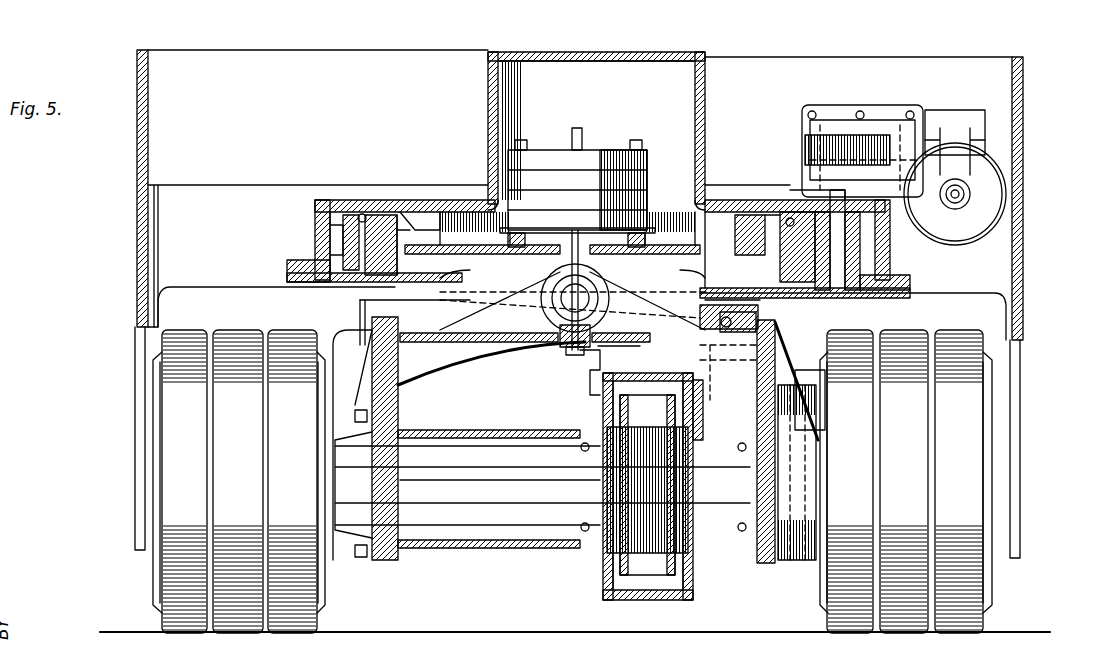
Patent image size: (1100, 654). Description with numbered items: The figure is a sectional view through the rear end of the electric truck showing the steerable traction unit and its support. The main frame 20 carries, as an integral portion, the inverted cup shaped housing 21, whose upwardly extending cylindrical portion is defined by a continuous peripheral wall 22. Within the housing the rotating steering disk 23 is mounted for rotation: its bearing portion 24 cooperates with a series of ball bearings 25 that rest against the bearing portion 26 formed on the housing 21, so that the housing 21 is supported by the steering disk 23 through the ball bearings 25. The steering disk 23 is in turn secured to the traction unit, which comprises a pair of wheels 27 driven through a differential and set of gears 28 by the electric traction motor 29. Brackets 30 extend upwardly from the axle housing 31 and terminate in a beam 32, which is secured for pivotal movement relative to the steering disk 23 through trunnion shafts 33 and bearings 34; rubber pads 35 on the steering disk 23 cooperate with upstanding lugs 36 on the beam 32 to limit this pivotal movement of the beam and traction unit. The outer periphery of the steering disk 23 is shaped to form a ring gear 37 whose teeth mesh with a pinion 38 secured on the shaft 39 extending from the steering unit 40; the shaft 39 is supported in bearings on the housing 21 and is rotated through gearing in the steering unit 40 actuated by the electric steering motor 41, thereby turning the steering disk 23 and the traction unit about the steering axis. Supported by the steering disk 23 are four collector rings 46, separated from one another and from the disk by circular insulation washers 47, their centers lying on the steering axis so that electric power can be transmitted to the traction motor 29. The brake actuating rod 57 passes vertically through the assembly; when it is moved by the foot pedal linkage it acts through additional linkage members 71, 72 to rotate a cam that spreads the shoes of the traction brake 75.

The main frame 20 is at (140, 152).
The inverted cup shaped housing 21 is at (336, 188).
The continuous peripheral wall 22 is at (706, 95).
The rotating steering disk 23 is at (820, 298).
The bearing portion 24 is at (364, 240).
The ball bearings 25 is at (360, 208).
The bearing portion 26 is at (392, 210).
The wheels 27 is at (170, 568).
The differential and set of gears 28 is at (710, 570).
The electric traction motor 29 is at (331, 323).
The brackets 30 is at (402, 386).
The axle housing 31 is at (355, 548).
The beam 32 is at (840, 332).
The trunnion shafts 33 is at (599, 298).
The bearings 34 is at (546, 285).
The rubber pads 35 is at (410, 300).
The upstanding lugs 36 is at (410, 306).
The ring gear 37 is at (342, 222).
The pinion 38 is at (862, 258).
The shaft 39 is at (862, 225).
The steering unit 40 is at (934, 95).
The electric steering motor 41 is at (1002, 212).
The collector rings 46 is at (649, 205).
The circular insulation washers 47 is at (611, 178).
The brake actuating rod 57 is at (586, 132).
The linkage member 71 is at (582, 366).
The linkage member 72 is at (730, 376).
The traction brake 75 is at (826, 409).